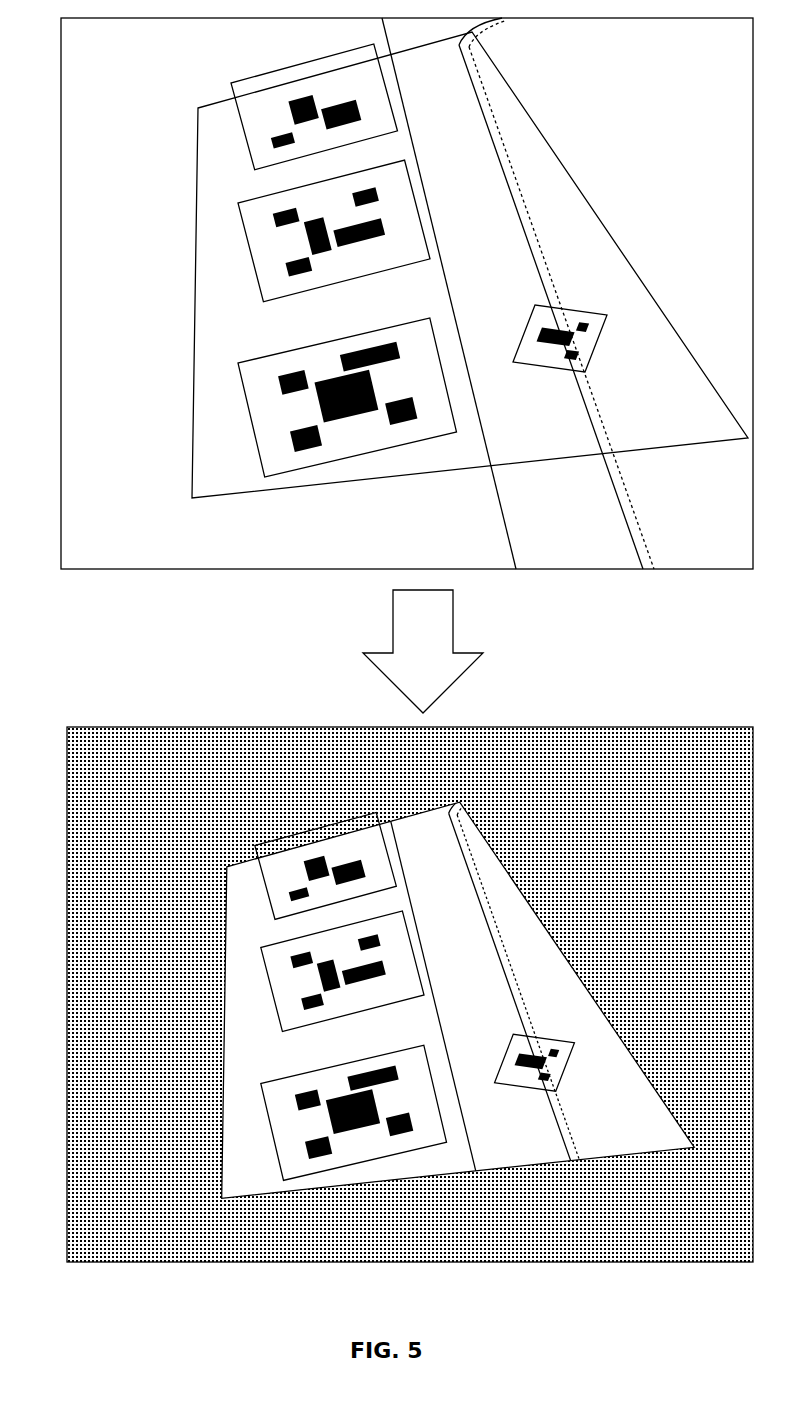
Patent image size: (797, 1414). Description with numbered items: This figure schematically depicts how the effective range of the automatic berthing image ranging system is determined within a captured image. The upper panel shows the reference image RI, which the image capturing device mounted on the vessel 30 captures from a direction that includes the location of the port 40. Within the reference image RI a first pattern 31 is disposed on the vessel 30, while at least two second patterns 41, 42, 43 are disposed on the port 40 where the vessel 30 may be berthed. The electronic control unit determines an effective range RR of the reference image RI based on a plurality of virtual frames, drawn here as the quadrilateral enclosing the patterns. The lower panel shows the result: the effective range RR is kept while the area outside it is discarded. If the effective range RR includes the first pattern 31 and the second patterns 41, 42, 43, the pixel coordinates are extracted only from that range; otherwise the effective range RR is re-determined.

The reference image RI is at (61, 122).
The effective range RR is at (198, 108).
The vessel 30 is at (677, 234).
The first pattern 31 is at (572, 306).
The port 40 is at (128, 250).
The second pattern 41 is at (252, 421).
The second pattern 42 is at (247, 247).
The second pattern 43 is at (240, 132).